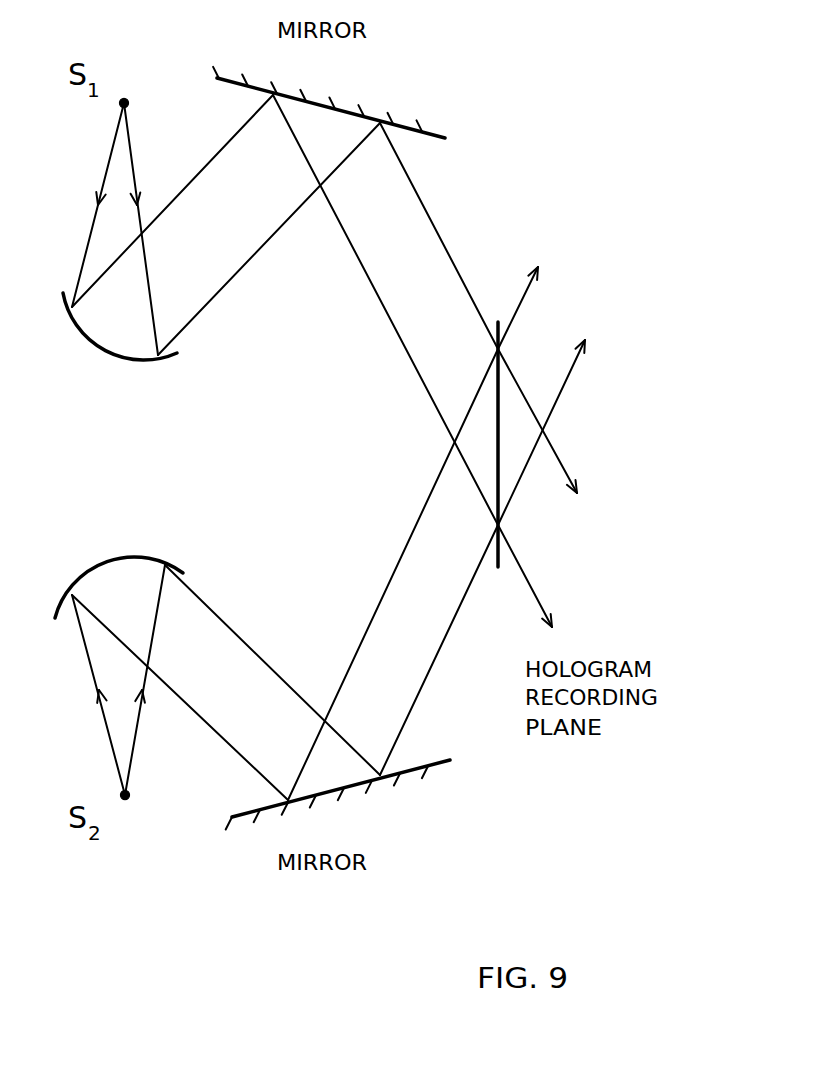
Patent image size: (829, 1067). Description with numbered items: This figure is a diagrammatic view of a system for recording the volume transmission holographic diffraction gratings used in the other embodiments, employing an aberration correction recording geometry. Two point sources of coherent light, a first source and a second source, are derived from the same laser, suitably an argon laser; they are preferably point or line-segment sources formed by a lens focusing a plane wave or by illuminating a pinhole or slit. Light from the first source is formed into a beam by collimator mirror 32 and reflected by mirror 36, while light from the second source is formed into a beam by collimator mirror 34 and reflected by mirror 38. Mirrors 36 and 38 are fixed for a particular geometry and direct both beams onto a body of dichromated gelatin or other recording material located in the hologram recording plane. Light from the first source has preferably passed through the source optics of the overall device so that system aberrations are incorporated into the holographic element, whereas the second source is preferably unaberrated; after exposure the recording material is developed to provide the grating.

The collimator mirror 32 is at (176, 360).
The collimator mirror 34 is at (155, 553).
The mirror 36 is at (433, 127).
The mirror 38 is at (442, 770).